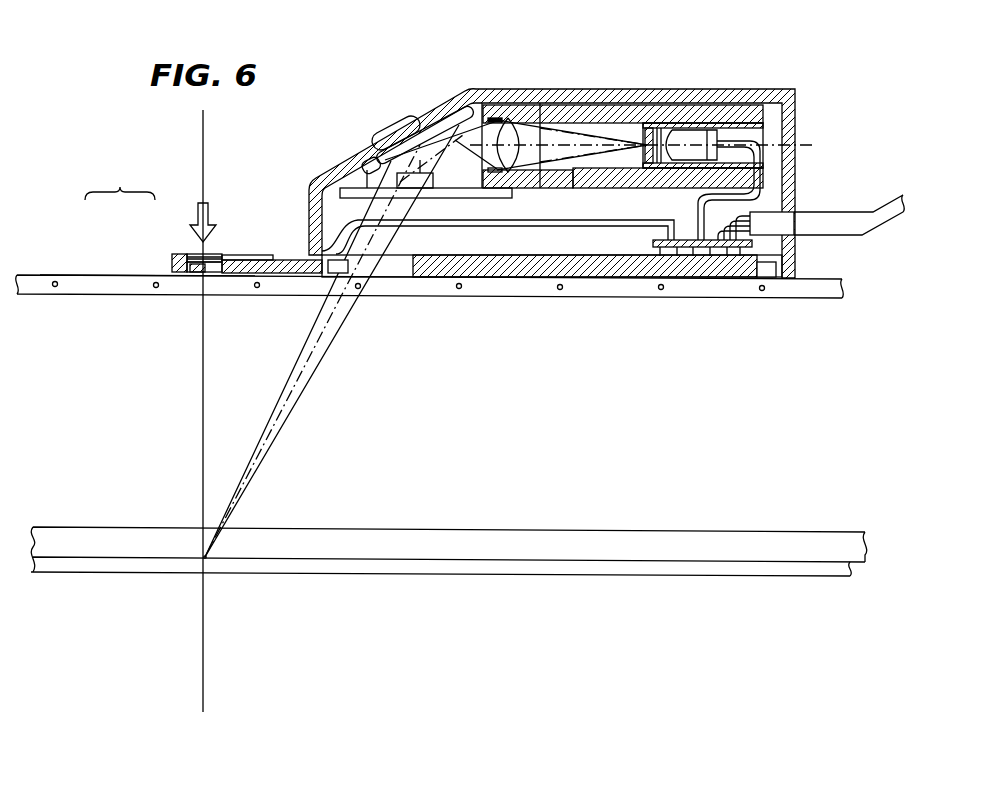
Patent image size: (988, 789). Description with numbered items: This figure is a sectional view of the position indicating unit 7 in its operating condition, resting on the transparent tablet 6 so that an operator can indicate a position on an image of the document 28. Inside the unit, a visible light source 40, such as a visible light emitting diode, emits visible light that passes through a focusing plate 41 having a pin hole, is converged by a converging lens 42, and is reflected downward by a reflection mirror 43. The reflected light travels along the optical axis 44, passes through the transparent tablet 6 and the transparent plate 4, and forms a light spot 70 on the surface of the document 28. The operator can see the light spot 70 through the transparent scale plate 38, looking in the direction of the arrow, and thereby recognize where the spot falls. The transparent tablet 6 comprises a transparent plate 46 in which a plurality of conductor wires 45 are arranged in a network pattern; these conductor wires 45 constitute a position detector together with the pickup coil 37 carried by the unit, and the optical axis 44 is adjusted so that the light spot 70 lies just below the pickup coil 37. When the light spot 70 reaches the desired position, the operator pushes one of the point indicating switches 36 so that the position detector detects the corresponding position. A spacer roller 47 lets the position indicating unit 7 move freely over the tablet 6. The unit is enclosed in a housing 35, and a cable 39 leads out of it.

The transparent plate 4 is at (670, 559).
The transparent tablet 6 is at (113, 176).
The position indicating unit 7 is at (538, 175).
The document 28 is at (780, 577).
The housing 35 is at (760, 88).
The point indicating switch 36 is at (402, 118).
The pickup coil 37 is at (210, 253).
The transparent scale plate 38 is at (274, 257).
The cable 39 is at (860, 206).
The visible light source 40 is at (692, 129).
The focusing plate 41 is at (648, 123).
The converging lens 42 is at (509, 118).
The reflection mirror 43 is at (462, 106).
The optical axis 44 is at (275, 412).
The conductor wires 45 is at (155, 283).
The transparent plate 46 is at (105, 276).
The spacer roller 47 is at (328, 274).
The light spot 70 is at (231, 559).